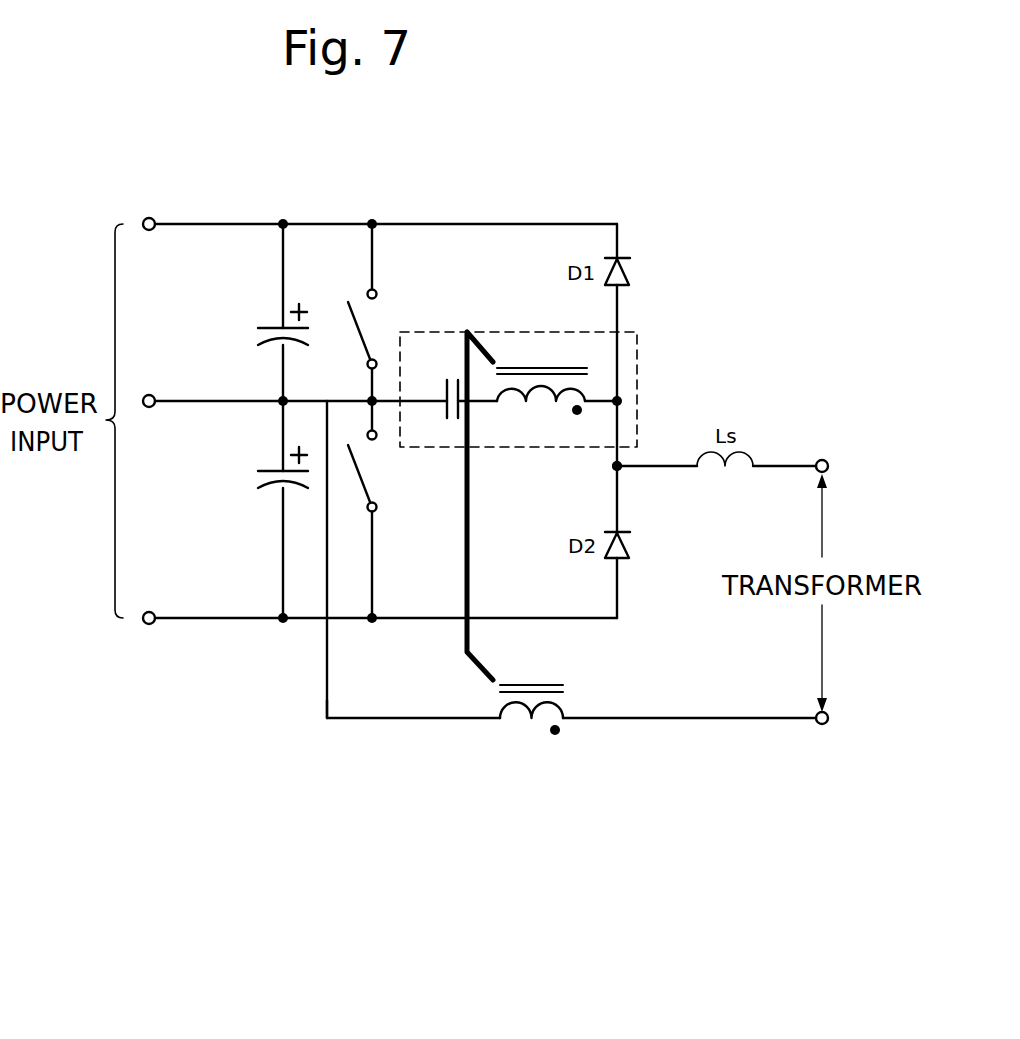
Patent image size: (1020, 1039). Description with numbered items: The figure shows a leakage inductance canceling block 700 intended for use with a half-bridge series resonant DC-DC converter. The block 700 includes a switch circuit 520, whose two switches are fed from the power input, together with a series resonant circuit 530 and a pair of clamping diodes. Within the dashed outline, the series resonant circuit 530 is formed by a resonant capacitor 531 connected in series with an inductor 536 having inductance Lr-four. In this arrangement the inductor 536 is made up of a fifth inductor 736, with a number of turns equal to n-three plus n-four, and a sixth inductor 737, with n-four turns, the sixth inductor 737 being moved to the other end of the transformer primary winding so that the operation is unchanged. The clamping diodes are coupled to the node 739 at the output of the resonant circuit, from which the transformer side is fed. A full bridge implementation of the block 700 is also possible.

The leakage inductance canceling block 700 is at (230, 780).
The switch circuit 520 is at (395, 247).
The series resonant circuit 530 is at (565, 312).
The resonant capacitor Cr4 531 is at (427, 353).
The inductor 536 is at (565, 342).
The fifth inductor 736 is at (585, 392).
The sixth inductor 737 is at (503, 703).
The output node 739 is at (620, 464).